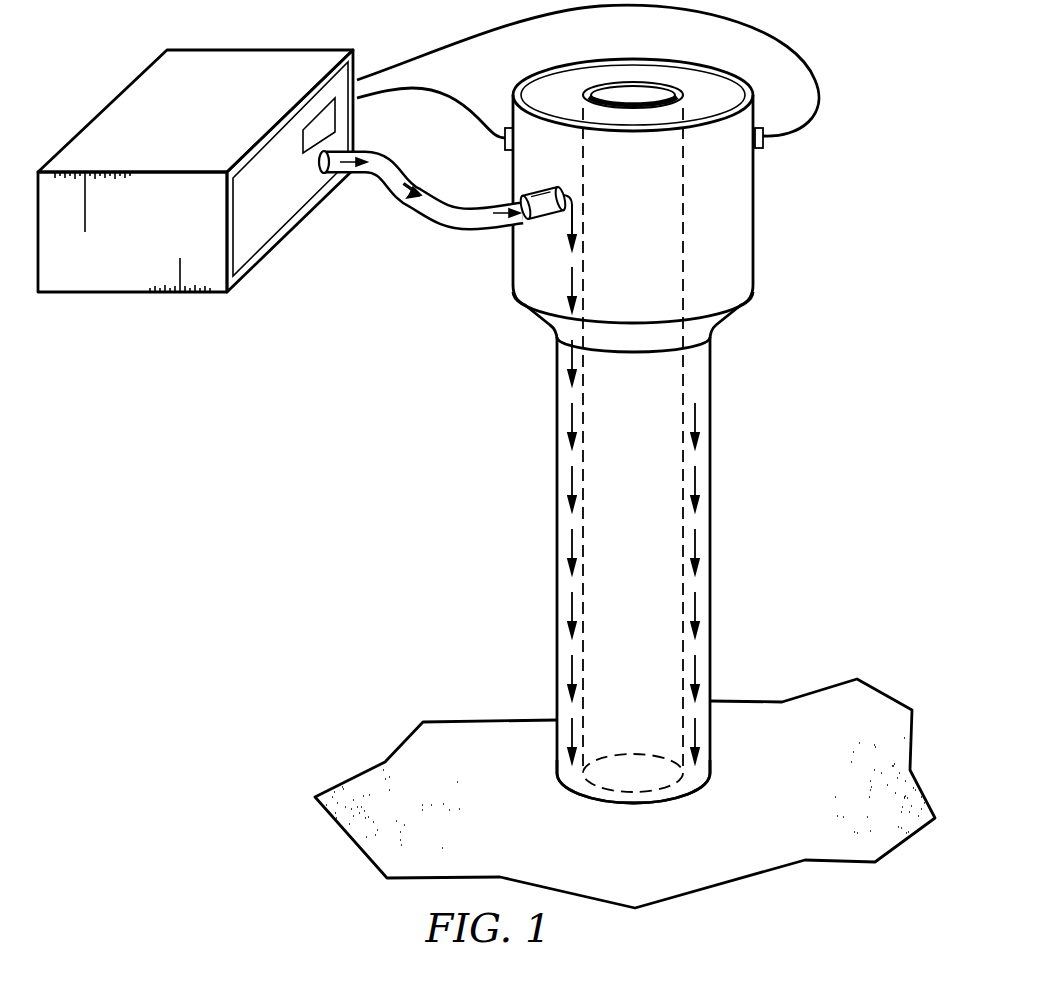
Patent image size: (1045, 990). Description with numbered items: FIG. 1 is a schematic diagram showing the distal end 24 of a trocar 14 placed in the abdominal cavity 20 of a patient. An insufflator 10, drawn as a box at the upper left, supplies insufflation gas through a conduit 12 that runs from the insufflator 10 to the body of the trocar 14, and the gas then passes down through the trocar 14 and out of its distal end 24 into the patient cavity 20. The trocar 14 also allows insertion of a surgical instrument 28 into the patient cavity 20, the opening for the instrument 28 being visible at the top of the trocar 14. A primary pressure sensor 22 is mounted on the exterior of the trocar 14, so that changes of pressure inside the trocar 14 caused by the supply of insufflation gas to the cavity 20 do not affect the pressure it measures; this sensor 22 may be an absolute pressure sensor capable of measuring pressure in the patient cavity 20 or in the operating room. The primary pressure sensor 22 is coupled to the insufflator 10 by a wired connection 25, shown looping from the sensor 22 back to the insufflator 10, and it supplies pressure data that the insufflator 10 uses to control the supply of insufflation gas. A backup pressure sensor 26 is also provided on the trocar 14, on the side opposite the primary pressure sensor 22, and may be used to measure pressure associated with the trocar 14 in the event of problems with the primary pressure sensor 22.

The insufflator 10 is at (129, 243).
The conduit 12 is at (418, 166).
The trocar 14 is at (754, 224).
The abdominal cavity 20 is at (747, 823).
The primary pressure sensor 22 is at (765, 140).
The distal end 24 is at (710, 768).
The wired connection 25 is at (478, 38).
The backup pressure sensor 26 is at (507, 130).
The surgical instrument 28 is at (660, 90).